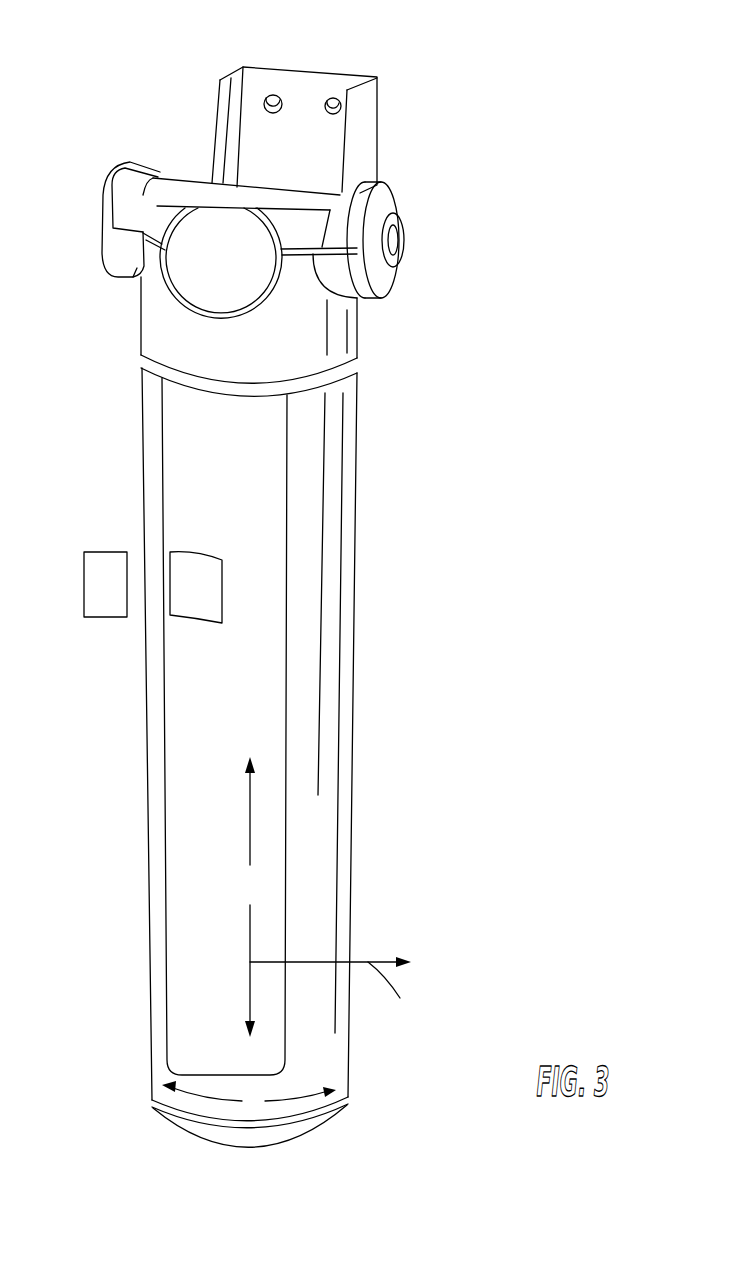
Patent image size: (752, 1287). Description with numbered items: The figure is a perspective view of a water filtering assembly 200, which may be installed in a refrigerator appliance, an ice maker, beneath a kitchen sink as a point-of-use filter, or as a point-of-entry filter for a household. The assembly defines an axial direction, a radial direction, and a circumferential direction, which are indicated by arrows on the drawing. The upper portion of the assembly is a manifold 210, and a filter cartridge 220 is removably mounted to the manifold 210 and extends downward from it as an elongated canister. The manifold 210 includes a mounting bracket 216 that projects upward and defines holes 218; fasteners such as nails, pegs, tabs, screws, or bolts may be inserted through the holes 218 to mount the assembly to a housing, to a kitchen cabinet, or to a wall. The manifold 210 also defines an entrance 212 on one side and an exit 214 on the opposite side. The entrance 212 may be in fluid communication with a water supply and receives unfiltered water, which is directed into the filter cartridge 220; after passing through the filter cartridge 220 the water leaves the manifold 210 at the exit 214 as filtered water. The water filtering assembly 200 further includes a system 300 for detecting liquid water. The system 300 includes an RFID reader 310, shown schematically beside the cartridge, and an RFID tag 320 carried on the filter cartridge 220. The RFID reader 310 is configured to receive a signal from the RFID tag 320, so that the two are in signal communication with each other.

The water filtering assembly 200 is at (545, 150).
The manifold 210 is at (340, 338).
The entrance 212 is at (96, 200).
The exit 214 is at (405, 240).
The mounting bracket 216 is at (365, 138).
The holes 218 is at (280, 88).
The filter cartridge 220 is at (337, 498).
The system for detecting liquid water 300 is at (135, 655).
The RFID reader 310 is at (105, 552).
The RFID tag 320 is at (198, 557).